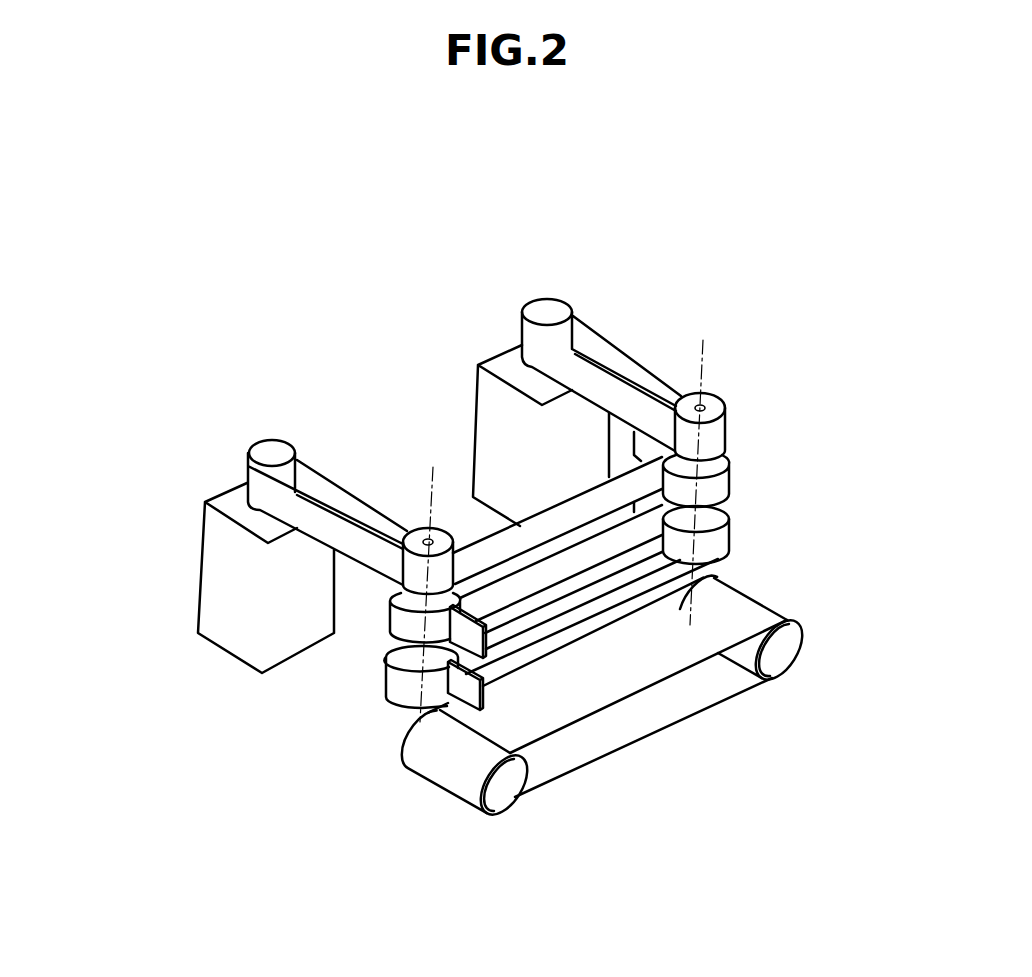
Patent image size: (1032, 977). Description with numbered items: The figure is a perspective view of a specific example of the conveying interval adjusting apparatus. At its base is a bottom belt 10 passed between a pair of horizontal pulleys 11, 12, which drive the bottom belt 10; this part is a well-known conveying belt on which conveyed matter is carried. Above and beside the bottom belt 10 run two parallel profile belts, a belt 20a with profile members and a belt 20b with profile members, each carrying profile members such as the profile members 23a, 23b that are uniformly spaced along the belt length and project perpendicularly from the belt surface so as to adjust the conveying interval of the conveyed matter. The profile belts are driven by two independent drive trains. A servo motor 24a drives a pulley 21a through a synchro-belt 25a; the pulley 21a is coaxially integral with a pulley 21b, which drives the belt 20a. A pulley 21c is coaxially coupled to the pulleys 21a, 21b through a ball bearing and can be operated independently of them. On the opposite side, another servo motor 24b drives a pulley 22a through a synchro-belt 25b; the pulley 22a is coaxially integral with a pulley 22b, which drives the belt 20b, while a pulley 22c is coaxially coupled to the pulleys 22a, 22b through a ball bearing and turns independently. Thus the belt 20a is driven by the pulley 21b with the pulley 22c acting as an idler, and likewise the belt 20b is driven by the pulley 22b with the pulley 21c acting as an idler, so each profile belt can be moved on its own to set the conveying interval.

The bottom belt 10 is at (567, 703).
The horizontal pulley 11 is at (503, 795).
The horizontal pulley 12 is at (773, 668).
The belt with profile members 20a is at (552, 572).
The belt with profile members 20b is at (640, 580).
The pulley 21a is at (407, 530).
The pulley 21b is at (393, 630).
The pulley 21c is at (397, 693).
The pulley 22a is at (715, 393).
The pulley 22b is at (730, 547).
The pulley 22c is at (728, 462).
The profile member 23a is at (470, 633).
The profile member 23b is at (467, 693).
The servo motor 24a is at (200, 612).
The servo motor 24b is at (488, 353).
The synchro-belt 25a is at (313, 473).
The synchro-belt 25b is at (590, 335).